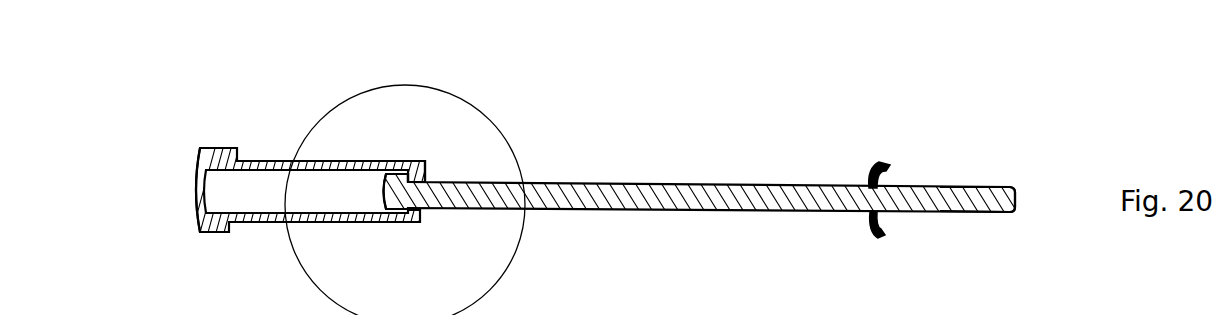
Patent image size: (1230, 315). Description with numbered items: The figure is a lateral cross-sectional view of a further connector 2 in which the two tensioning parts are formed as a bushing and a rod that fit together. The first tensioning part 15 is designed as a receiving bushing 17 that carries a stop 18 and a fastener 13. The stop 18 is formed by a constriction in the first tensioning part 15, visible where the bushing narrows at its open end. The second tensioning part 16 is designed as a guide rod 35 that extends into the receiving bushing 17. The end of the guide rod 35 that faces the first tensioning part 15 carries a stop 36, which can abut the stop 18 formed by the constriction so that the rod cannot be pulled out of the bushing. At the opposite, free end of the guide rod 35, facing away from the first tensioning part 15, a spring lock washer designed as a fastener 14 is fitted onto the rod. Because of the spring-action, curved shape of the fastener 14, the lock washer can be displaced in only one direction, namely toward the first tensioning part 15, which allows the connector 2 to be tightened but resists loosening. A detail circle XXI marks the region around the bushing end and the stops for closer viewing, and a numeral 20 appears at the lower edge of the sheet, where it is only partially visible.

The detail circle XXI is at (322, 121).
The fastener 13 is at (225, 158).
The receiving bushing 17 is at (277, 187).
The first tensioning part 15 is at (188, 183).
The stop 18 is at (427, 168).
The stop 36 is at (406, 177).
The guide rod 35 is at (726, 203).
The second tensioning part 16 is at (943, 167).
The fastener 14 is at (879, 166).
The connector 2 is at (684, 164).
The reference numeral 20 is at (225, 311).